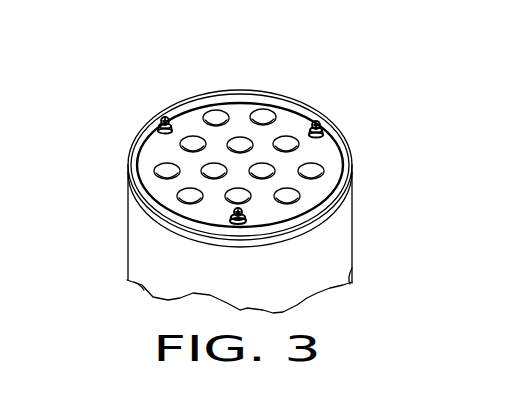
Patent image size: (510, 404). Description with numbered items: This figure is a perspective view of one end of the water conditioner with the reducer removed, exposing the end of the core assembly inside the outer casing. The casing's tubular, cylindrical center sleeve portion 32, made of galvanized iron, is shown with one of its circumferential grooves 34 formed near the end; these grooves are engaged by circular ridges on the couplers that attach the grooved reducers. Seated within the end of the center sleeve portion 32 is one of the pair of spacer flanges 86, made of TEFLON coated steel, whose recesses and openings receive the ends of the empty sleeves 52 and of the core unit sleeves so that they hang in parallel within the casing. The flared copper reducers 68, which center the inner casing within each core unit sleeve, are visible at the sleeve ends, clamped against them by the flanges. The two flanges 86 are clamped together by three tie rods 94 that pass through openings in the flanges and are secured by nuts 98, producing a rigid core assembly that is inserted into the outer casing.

The center sleeve portion 32 is at (313, 272).
The circumferential grooves 34 is at (327, 221).
The sleeves 52 is at (213, 113).
The flared copper reducers 68 is at (238, 143).
The spacer flanges 86 is at (290, 98).
The tie rods 94 is at (322, 125).
The nuts 98 is at (323, 127).